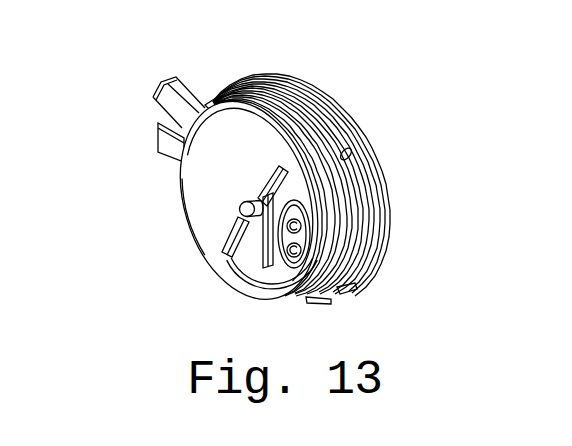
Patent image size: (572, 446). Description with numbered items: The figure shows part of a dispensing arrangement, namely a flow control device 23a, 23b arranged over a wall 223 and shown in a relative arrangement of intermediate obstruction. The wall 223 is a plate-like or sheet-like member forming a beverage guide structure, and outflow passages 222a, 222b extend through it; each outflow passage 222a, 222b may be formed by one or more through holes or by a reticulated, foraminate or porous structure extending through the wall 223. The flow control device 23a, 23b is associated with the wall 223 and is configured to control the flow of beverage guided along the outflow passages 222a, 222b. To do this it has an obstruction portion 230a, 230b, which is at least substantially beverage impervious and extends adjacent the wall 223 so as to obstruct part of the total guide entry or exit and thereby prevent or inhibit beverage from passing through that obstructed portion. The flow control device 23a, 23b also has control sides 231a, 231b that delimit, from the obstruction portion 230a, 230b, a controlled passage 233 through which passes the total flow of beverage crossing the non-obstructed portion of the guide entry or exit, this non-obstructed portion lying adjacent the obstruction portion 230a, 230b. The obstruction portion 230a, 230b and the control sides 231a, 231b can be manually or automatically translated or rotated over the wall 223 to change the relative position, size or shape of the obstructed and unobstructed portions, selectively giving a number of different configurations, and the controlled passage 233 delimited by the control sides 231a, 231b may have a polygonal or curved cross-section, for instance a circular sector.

The wall 223 is at (273, 84).
The controlled passage 233 is at (297, 222).
The control side 231a is at (272, 187).
The control side 231b is at (276, 248).
The obstruction portion 230a is at (218, 203).
The obstruction portion 230b is at (258, 243).
The flow control device 23a is at (202, 240).
The flow control device 23b is at (265, 255).
The outflow passage 222a is at (298, 252).
The outflow passage 222b is at (426, 258).